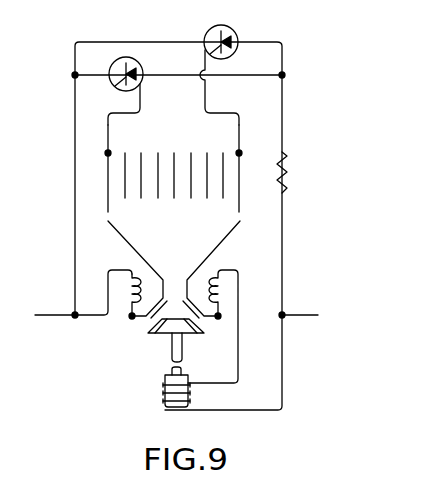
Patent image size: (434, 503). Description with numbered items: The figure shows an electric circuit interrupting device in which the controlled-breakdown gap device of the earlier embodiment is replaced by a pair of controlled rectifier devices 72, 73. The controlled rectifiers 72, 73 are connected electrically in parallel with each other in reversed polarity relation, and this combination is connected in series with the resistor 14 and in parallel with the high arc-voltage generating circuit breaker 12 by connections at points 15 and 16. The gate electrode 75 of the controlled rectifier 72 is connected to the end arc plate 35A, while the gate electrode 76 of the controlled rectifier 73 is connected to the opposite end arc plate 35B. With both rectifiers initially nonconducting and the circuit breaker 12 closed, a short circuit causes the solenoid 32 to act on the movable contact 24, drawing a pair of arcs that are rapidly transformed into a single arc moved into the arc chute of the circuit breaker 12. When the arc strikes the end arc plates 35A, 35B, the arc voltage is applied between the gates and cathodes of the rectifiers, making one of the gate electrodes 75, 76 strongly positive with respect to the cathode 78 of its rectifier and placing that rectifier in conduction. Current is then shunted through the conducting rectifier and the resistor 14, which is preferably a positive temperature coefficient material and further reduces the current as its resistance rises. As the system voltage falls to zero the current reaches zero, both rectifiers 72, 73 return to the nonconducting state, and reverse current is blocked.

The circuit breaker 12 is at (107, 243).
The resistor 14 is at (288, 165).
The connection point 15 is at (74, 317).
The connection point 16 is at (284, 313).
The movable contact 24 is at (163, 333).
The solenoid 32 is at (164, 395).
The end arc plate 35A is at (239, 208).
The end arc plate 35B is at (110, 208).
The controlled rectifier 72 is at (234, 29).
The controlled rectifier 73 is at (138, 63).
The gate electrode 75 is at (204, 62).
The gate electrode 76 is at (141, 97).
The cathode 78 is at (176, 77).